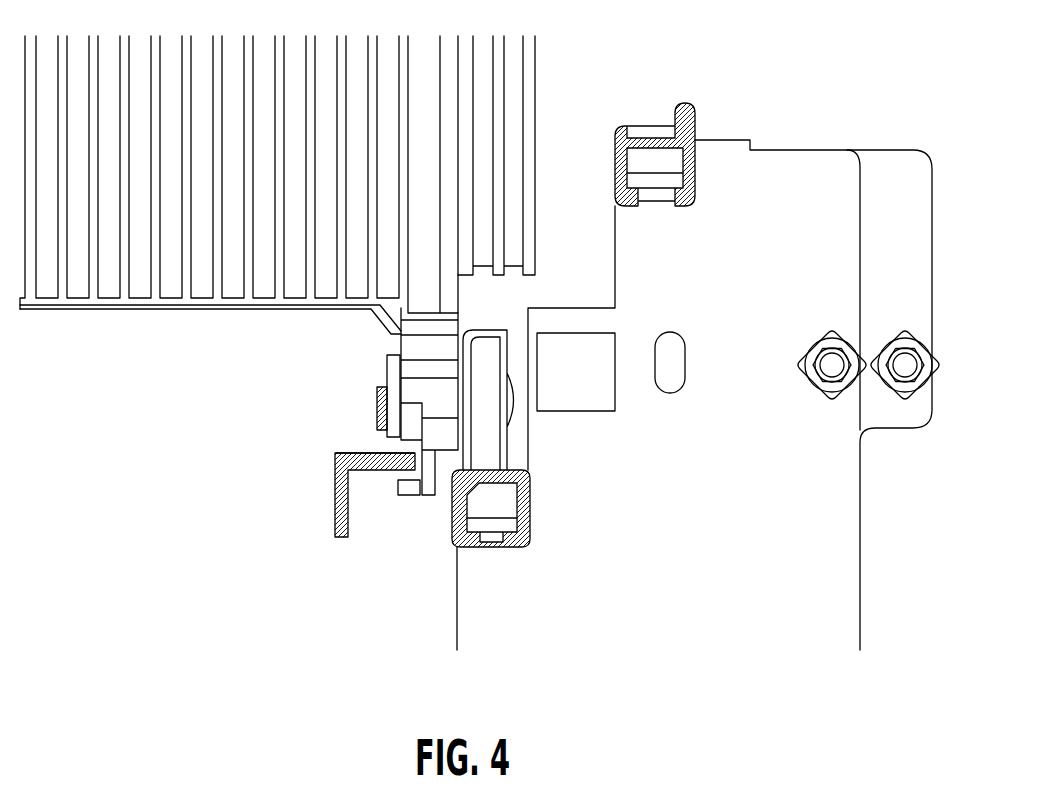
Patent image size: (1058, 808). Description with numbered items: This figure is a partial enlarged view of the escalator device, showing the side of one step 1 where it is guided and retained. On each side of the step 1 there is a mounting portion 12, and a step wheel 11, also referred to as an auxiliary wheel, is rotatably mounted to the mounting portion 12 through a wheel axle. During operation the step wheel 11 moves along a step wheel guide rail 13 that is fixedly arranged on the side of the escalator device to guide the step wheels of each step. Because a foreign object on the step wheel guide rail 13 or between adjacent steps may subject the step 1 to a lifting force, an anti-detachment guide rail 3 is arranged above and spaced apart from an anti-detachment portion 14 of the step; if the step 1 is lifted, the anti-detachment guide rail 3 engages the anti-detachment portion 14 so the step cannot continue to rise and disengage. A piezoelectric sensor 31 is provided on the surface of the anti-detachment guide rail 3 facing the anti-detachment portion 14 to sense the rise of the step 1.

The step 1 is at (195, 197).
The anti-detachment guide rail 3 is at (337, 452).
The piezoelectric sensor 31 is at (388, 452).
The step wheel 11 is at (490, 345).
The mounting portion 12 is at (395, 388).
The step wheel guide rail 13 is at (452, 532).
The anti-detachment portion 14 is at (408, 498).